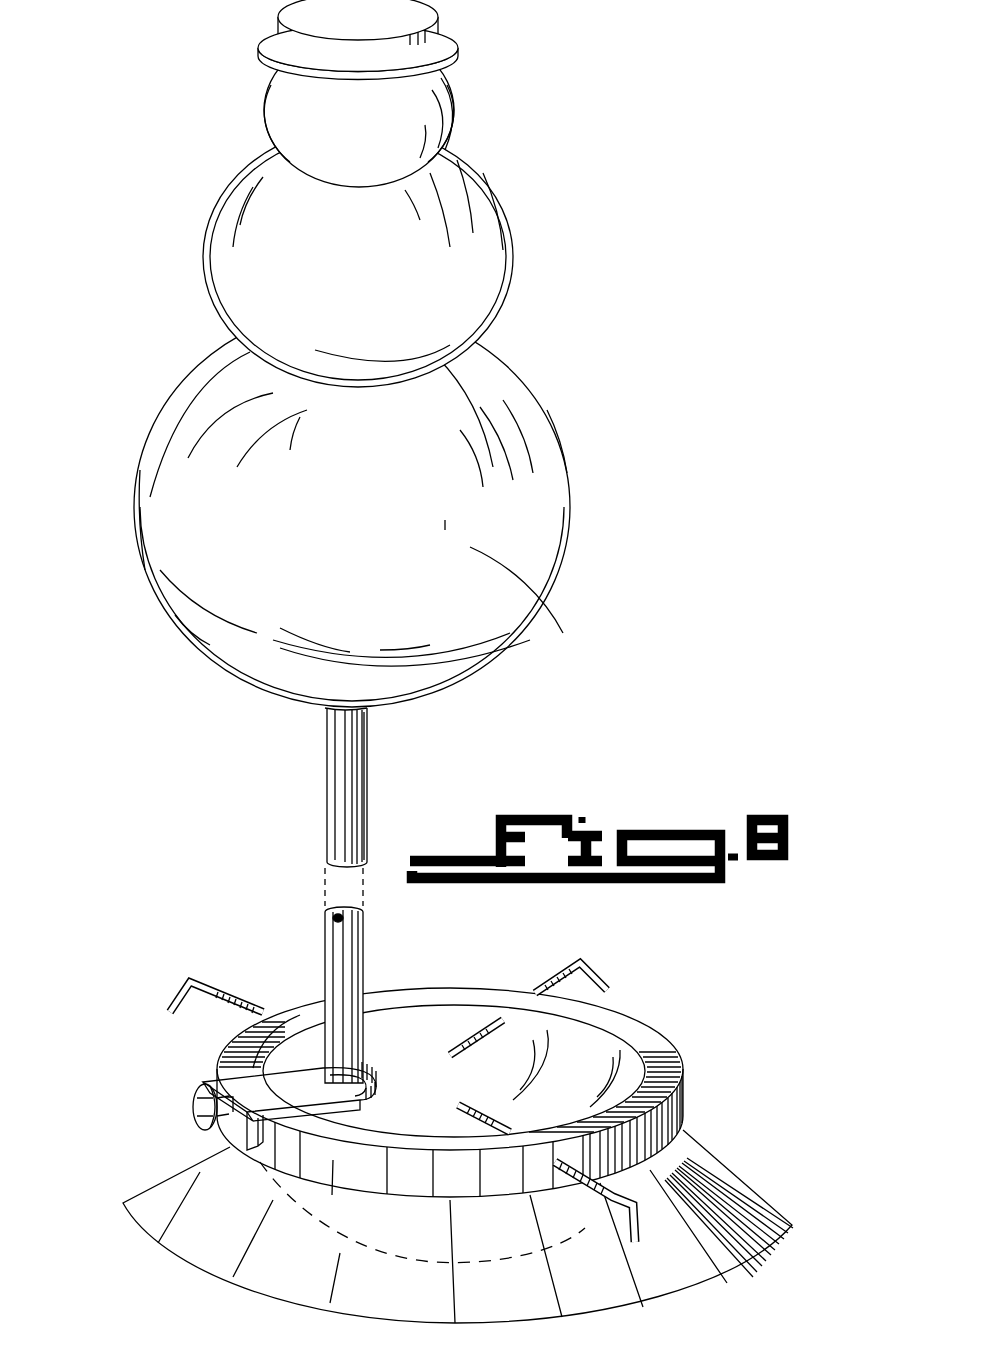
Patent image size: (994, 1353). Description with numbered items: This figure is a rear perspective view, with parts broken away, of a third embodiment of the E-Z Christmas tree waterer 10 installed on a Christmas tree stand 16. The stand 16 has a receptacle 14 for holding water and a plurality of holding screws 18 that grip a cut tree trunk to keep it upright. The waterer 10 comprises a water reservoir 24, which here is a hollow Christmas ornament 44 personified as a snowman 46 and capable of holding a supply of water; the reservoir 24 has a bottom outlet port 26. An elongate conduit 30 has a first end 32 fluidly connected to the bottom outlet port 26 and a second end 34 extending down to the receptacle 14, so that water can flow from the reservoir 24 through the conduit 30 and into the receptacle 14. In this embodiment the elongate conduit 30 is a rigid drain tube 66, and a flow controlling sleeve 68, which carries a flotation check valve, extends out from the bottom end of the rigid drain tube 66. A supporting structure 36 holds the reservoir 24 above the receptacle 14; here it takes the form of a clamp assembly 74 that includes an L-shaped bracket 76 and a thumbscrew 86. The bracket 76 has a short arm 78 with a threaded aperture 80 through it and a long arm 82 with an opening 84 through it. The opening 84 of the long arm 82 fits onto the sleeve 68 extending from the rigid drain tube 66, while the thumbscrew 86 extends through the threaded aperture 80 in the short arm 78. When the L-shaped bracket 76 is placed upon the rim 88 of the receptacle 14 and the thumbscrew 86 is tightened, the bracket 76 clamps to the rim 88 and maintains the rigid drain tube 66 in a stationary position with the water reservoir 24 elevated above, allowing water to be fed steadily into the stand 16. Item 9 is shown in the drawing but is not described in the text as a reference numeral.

The groove 9 is at (404, 1211).
The E-Z Christmas tree waterer 10 is at (188, 189).
The receptacle 14 is at (597, 1052).
The stand 16 is at (752, 1198).
The holding screws 18 is at (180, 997).
The water reservoir 24 is at (185, 653).
The bottom outlet port 26 is at (325, 710).
The elongate conduit 30 is at (322, 828).
The first end 32 is at (368, 710).
The second end 34 is at (387, 1073).
The structure 36 is at (186, 1072).
The hollow Christmas ornament 44 is at (148, 430).
The snowman 46 is at (545, 447).
The rigid drain tube 66 is at (325, 945).
The sleeve 68 is at (363, 1113).
The clamp assembly 74 is at (178, 1103).
The L-shaped bracket 76 is at (212, 1075).
The short arm 78 is at (237, 1135).
The threaded aperture 80 is at (203, 1128).
The long arm 82 is at (290, 1080).
The opening 84 is at (313, 1133).
The thumbscrew 86 is at (190, 1113).
The rim 88 is at (655, 1057).